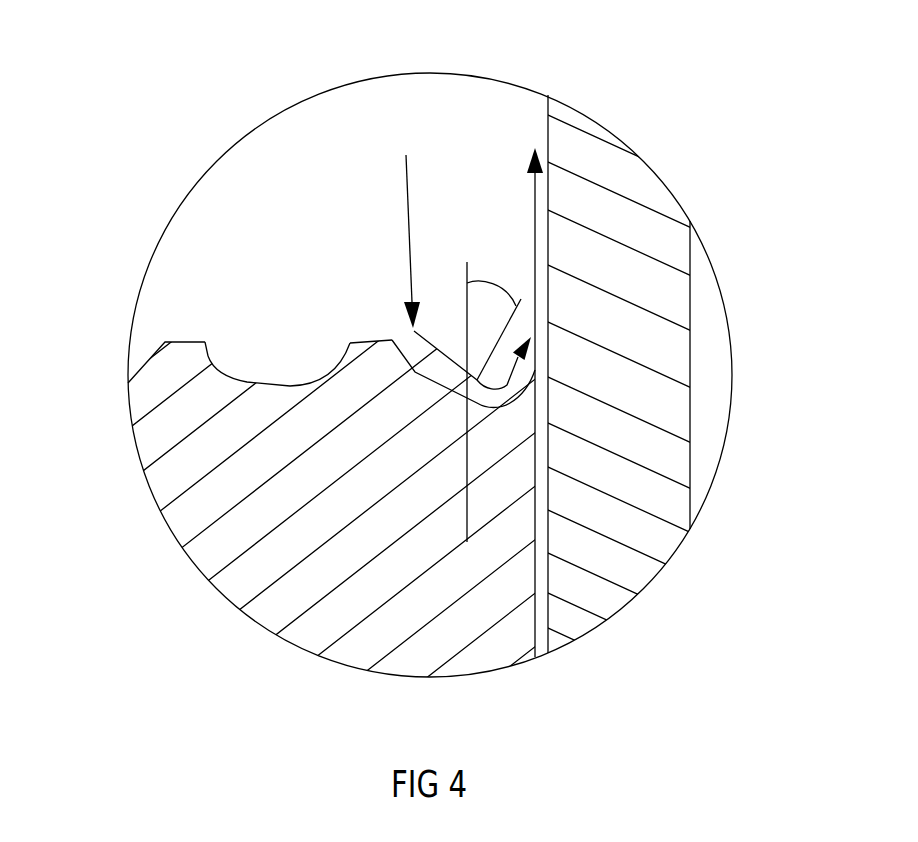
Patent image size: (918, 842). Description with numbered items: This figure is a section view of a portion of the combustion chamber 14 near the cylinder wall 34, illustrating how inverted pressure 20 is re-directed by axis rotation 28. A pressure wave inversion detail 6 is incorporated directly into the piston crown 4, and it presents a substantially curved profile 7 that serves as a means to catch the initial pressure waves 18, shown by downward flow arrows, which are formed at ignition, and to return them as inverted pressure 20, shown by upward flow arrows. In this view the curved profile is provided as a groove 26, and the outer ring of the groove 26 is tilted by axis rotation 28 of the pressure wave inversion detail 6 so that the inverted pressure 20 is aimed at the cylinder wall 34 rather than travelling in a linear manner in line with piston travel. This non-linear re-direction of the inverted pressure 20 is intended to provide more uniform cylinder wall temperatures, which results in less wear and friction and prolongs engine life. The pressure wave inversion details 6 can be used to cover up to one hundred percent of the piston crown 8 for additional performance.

The piston crown 4 is at (178, 342).
The pressure wave inversion detail 6 is at (277, 384).
The substantially curved profile 7 is at (208, 353).
The piston crown 8 is at (183, 520).
The combustion chamber 14 is at (230, 147).
The initial pressure waves 18 is at (408, 212).
The inverted pressure 20 is at (535, 240).
The circular groove 26 is at (415, 372).
The axis rotation 28 is at (487, 283).
The cylinder wall 34 is at (548, 532).